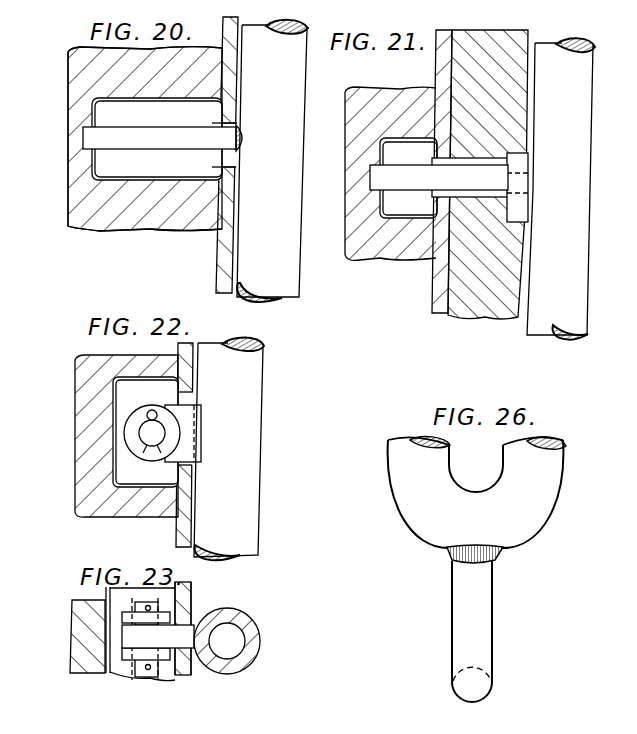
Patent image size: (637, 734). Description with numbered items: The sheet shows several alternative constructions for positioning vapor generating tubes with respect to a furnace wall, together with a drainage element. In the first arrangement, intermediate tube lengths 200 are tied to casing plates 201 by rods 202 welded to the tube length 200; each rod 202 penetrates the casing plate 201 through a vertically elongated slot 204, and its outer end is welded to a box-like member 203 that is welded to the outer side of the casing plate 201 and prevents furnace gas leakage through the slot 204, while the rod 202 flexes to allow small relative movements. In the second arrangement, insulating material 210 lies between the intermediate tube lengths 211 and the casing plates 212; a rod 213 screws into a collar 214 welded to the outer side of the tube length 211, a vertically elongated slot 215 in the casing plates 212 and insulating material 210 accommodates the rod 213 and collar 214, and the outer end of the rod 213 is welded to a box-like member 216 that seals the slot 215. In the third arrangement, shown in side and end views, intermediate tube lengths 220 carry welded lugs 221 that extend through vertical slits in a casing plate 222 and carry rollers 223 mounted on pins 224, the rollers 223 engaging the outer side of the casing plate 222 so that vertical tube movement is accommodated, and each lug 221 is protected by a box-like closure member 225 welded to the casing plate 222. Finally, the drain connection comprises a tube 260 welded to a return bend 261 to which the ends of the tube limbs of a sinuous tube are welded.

In FIG. 20, the intermediate tube length 200 is at (292, 271).
In FIG. 20, the casing plate 201 is at (222, 246).
In FIG. 20, the rod 202 is at (100, 143).
In FIG. 20, the box-like member 203 is at (108, 182).
In FIG. 20, the vertically elongated slot 204 is at (219, 162).
In FIG. 21, the insulating material 210 is at (495, 306).
In FIG. 21, the intermediate tube length 211 is at (582, 193).
In FIG. 21, the casing plate 212 is at (436, 297).
In FIG. 21, the rod 213 is at (408, 184).
In FIG. 21, the collar 214 is at (525, 165).
In FIG. 21, the vertically elongated slot 215 is at (523, 214).
In FIG. 21, the box-like member 216 is at (413, 138).
In FIG. 22, the intermediate tube length 220 is at (247, 448).
In FIG. 23, the intermediate tube length 220 is at (250, 629).
In FIG. 22, the lug 221 is at (185, 419).
In FIG. 23, the lug 221 is at (125, 636).
In FIG. 22, the casing plate 222 is at (179, 526).
In FIG. 23, the casing plate 222 is at (189, 671).
In FIG. 22, the roller 223 is at (140, 450).
In FIG. 23, the roller 223 is at (128, 616).
In FIG. 22, the pin 224 is at (150, 428).
In FIG. 23, the pin 224 is at (150, 670).
In FIG. 22, the box-like closure member 225 is at (113, 382).
In FIG. 26, the tube 260 is at (485, 631).
In FIG. 26, the return bend 261 is at (537, 520).